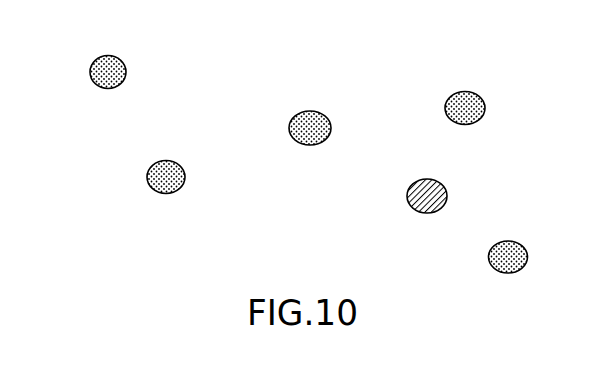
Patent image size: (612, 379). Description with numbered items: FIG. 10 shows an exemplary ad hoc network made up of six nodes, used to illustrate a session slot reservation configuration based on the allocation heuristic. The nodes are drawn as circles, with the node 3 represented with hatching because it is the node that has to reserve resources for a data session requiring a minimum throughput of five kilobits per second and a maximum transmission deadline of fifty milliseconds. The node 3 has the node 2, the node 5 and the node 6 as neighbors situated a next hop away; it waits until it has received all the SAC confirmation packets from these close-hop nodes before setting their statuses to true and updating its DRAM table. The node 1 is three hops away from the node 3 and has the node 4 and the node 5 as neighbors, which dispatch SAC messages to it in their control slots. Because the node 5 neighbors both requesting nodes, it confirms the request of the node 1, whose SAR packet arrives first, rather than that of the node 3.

The node 1 is at (165, 161).
The node 2 is at (476, 93).
The node 3 is at (438, 180).
The node 4 is at (125, 58).
The node 5 is at (305, 111).
The node 6 is at (518, 242).